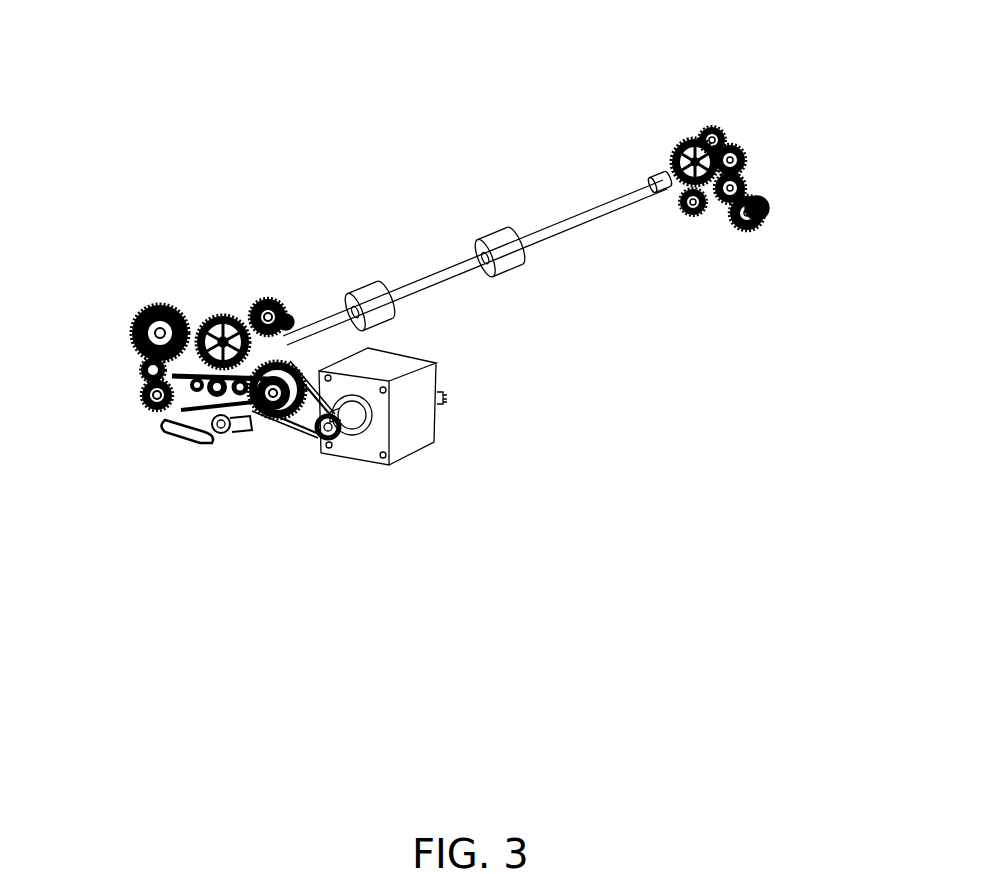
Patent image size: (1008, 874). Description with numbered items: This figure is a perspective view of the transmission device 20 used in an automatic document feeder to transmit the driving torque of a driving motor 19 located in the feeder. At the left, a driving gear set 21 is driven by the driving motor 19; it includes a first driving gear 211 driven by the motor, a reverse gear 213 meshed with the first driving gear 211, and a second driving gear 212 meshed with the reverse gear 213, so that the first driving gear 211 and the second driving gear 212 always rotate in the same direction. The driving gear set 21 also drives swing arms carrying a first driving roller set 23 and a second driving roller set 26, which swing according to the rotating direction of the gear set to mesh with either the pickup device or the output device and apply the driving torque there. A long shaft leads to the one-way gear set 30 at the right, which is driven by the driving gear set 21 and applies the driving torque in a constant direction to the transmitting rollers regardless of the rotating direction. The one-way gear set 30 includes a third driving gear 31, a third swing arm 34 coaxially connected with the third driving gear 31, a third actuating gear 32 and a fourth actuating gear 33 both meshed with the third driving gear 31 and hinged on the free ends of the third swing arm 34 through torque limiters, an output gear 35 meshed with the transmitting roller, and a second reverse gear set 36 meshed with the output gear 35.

The driving motor 19 is at (432, 437).
The transmission device 20 is at (187, 334).
The driving gear set 21 is at (221, 267).
The first driving gear 211 is at (165, 303).
The second driving gear 212 is at (276, 288).
The reverse gear 213 is at (205, 318).
The first driving roller set 23 is at (150, 365).
The second driving roller set 26 is at (202, 428).
The one-way gear set 30 is at (731, 151).
The third driving gear 31 is at (672, 146).
The third actuating gear 32 is at (692, 214).
The fourth actuating gear 33 is at (711, 126).
The third swing arm 34 is at (733, 128).
The output gear 35 is at (752, 194).
The second reverse gear set 36 is at (746, 168).